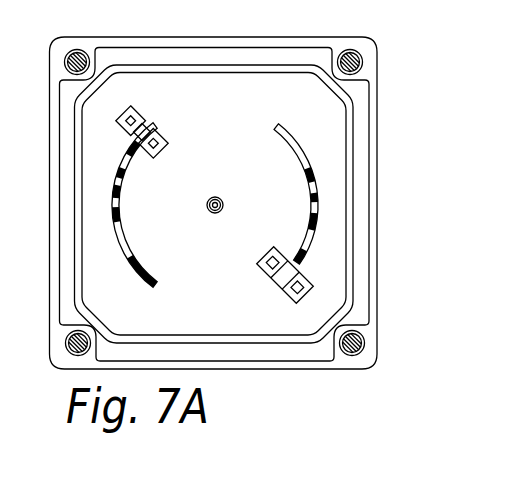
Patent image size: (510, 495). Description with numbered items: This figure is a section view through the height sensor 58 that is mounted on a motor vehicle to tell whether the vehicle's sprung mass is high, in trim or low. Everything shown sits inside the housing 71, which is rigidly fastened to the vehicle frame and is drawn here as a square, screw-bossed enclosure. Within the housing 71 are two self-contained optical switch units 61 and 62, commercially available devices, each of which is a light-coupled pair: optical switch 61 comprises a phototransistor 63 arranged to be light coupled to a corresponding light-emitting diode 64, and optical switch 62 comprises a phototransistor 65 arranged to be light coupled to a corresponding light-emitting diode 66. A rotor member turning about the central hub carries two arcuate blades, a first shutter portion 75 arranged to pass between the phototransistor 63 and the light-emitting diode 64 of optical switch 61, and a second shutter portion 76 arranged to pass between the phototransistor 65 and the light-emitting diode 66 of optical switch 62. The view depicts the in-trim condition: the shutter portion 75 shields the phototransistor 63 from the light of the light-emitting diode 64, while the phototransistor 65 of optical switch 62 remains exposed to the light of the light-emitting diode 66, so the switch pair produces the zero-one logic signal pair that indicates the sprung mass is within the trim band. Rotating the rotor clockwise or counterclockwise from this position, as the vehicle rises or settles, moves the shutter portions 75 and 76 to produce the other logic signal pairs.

The height sensor 58 is at (244, 185).
The housing 71 is at (256, 38).
The optical switch unit 61 is at (170, 136).
The optical switch unit 62 is at (265, 273).
The phototransistor 63 is at (179, 144).
The light-emitting diode 64 is at (142, 110).
The phototransistor 65 is at (287, 297).
The light-emitting diode 66 is at (277, 253).
The first shutter portion 75 is at (133, 252).
The second shutter portion 76 is at (301, 159).